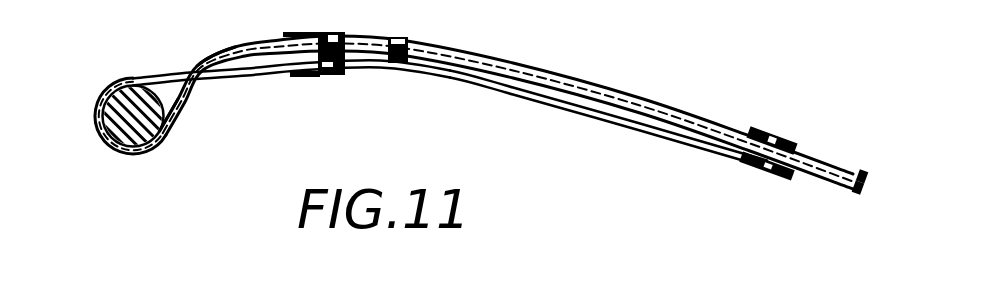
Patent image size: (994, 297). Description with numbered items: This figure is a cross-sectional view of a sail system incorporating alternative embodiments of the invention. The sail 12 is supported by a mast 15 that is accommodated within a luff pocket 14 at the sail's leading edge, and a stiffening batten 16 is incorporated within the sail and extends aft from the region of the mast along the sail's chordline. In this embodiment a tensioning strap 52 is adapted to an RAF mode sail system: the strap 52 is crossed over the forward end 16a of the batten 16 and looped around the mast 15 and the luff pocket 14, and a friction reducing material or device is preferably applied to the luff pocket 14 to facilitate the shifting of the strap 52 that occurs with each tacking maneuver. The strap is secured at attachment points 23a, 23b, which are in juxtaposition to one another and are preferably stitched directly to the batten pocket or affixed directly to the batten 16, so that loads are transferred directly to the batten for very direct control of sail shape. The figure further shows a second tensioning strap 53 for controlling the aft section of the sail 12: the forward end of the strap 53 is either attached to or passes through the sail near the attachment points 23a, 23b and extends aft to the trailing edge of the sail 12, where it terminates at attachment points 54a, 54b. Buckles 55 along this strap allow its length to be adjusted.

The sail 12 is at (616, 70).
The luff pocket 14 is at (178, 115).
The mast 15 is at (128, 153).
The batten 16 is at (320, 77).
The forward end of batten 16a is at (200, 60).
The attachment point 23a is at (396, 64).
The attachment point 23b is at (399, 37).
The tensioning strap 52 is at (95, 113).
The second tensioning strap 53 is at (592, 118).
The attachment point 54a is at (856, 198).
The attachment point 54b is at (859, 172).
The buckle 55 is at (784, 134).